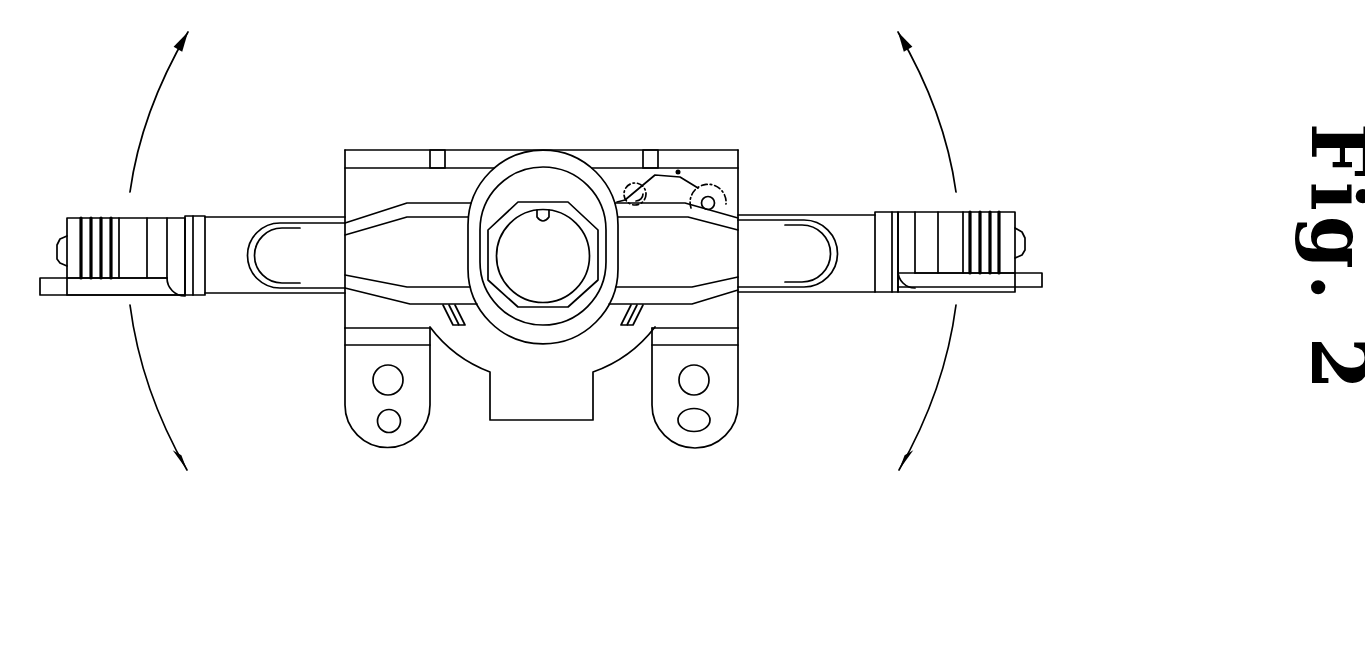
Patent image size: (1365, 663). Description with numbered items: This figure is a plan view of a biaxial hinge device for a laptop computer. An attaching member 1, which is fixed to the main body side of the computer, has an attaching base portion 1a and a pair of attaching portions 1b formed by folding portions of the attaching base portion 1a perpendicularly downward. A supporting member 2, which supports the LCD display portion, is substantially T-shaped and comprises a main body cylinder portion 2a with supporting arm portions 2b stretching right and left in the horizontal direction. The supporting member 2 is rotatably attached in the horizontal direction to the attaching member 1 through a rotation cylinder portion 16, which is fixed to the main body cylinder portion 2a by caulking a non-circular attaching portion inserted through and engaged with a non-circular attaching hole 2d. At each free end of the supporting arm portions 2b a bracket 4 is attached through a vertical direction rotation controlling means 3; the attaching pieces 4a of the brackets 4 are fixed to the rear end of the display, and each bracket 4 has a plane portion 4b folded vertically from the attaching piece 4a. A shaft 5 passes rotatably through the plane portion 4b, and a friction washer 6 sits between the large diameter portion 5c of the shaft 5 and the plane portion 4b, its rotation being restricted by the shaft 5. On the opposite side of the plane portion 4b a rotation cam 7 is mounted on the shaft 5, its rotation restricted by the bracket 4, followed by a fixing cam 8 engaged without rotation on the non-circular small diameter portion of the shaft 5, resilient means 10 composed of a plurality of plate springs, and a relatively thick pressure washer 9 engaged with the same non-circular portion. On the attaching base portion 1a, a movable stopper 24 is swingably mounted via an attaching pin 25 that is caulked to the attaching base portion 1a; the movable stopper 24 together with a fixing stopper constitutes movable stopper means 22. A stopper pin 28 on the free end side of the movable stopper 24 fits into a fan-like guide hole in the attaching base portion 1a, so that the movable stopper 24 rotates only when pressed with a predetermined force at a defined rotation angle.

The attaching member 1 is at (741, 184).
The attaching base portion 1a is at (368, 314).
The attaching portions 1b is at (370, 428).
The supporting member 2 is at (522, 343).
The main body cylinder portion 2a is at (553, 338).
The supporting arm portions 2b is at (265, 218).
The non-circular attaching hole 2d is at (530, 213).
The vertical direction rotation controlling means 3 is at (155, 195).
The bracket 4 is at (133, 295).
The attaching pieces 4a is at (52, 285).
The plane portion 4b is at (180, 220).
The shaft 5 is at (58, 248).
The large diameter portion 5c is at (202, 295).
The friction washer 6 is at (188, 295).
The rotation cam 7 is at (158, 278).
The fixing cam 8 is at (132, 227).
The pressure washer 9 is at (77, 217).
The resilient means 10 is at (88, 280).
The rotation cylinder portion 16 is at (545, 213).
The movable stopper means 22 is at (690, 192).
The movable stopper 24 is at (717, 187).
The attaching pin 25 is at (716, 198).
The stopper pin 28 is at (640, 193).